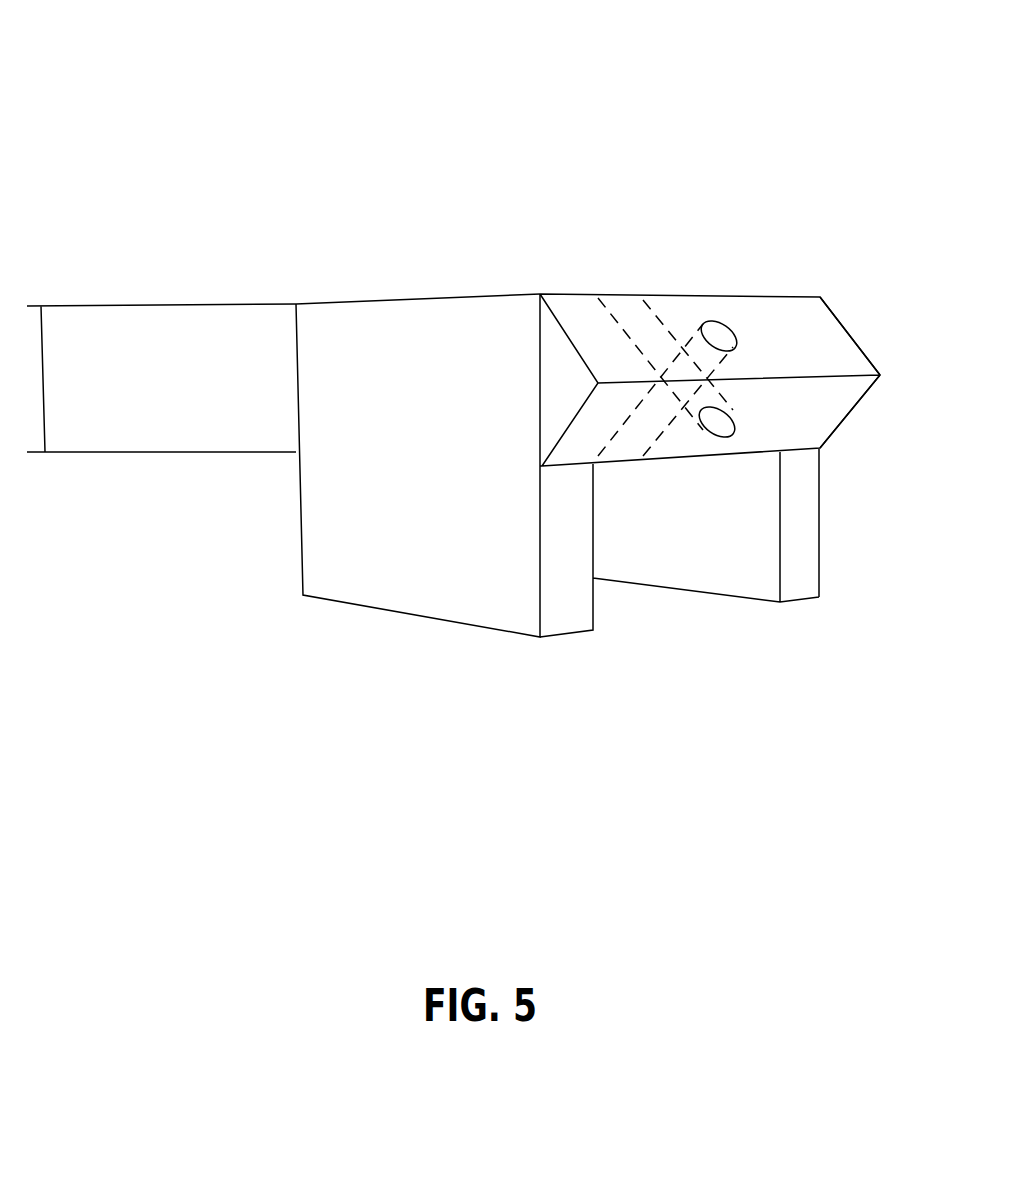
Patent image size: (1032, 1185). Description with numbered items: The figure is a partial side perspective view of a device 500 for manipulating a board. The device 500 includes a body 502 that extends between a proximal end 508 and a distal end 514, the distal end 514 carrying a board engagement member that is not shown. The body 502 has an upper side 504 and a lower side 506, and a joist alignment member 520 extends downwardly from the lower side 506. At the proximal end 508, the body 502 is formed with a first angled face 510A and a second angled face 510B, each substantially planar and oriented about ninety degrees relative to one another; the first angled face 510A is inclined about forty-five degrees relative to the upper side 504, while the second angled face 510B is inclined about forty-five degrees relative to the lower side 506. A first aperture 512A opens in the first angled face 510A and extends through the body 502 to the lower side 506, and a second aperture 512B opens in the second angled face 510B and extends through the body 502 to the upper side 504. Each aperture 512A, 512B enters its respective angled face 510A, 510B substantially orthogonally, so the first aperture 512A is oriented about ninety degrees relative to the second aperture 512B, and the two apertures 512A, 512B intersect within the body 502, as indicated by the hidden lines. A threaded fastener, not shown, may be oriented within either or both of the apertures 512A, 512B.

The device 500 is at (321, 109).
The body 502 is at (461, 209).
The upper side 504 is at (392, 297).
The lower side 506 is at (617, 467).
The proximal end 508 is at (832, 144).
The first angled face 510A is at (838, 350).
The second angled face 510B is at (849, 400).
The first aperture 512A is at (717, 335).
The second aperture 512B is at (717, 425).
The distal end 514 is at (88, 214).
The joist alignment member 520 is at (397, 578).